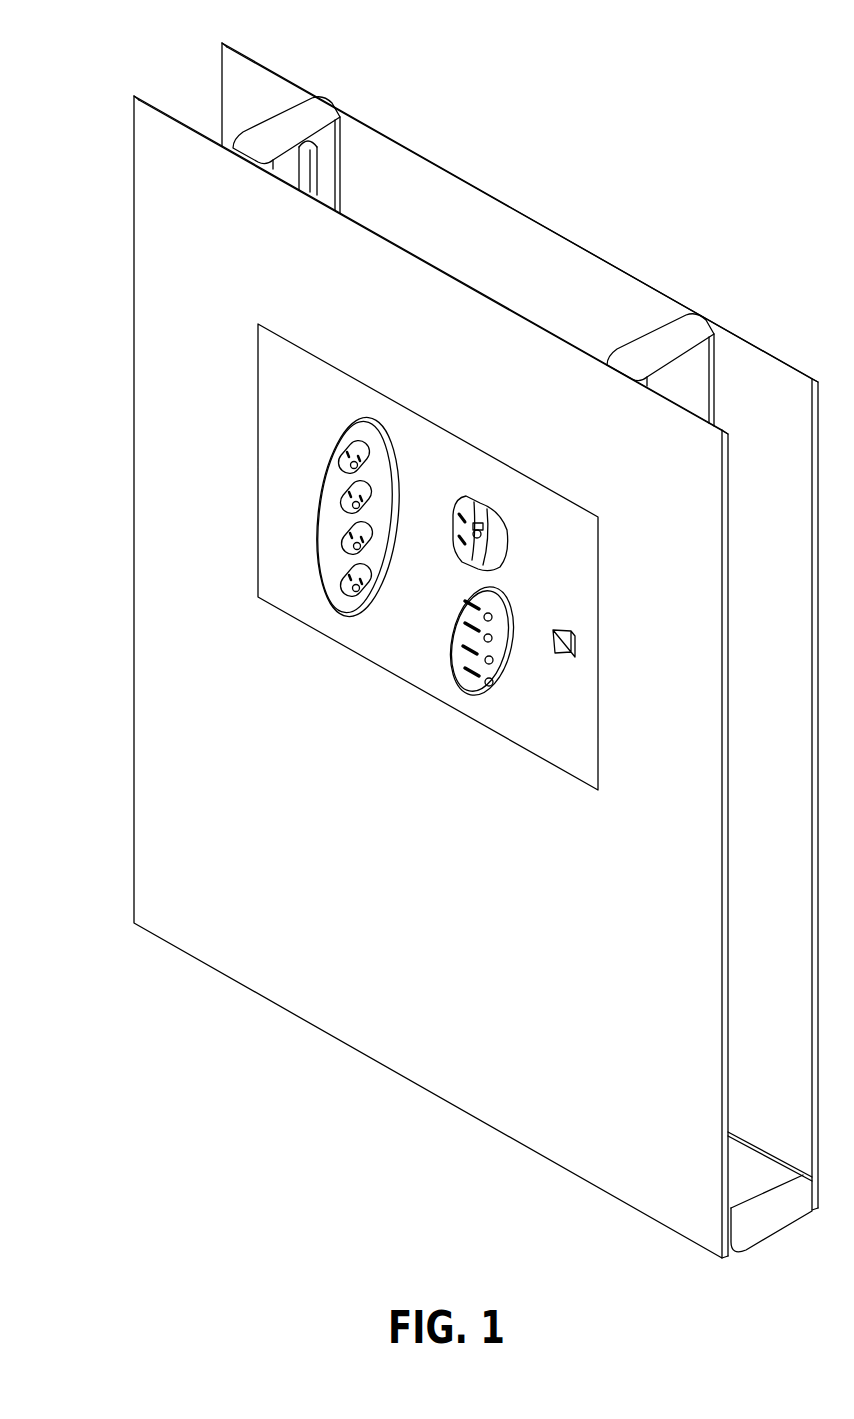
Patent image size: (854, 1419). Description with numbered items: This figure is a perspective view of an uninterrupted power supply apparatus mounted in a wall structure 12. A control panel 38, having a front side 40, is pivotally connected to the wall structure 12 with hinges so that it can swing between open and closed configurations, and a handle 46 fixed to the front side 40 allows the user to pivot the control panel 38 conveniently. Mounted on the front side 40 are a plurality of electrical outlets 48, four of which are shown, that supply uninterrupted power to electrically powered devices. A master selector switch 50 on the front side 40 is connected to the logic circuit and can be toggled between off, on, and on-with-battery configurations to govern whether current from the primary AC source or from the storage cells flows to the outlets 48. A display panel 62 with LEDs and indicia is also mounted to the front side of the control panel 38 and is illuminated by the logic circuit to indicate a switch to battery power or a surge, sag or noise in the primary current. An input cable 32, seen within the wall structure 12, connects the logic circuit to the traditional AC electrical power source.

The wall structure 12 is at (132, 188).
The input cable 32 is at (318, 152).
The control panel 38 is at (512, 742).
The front side 40 is at (568, 500).
The handle 46 is at (574, 636).
The electrical outlets 48 is at (322, 498).
The master selector switch 50 is at (477, 522).
The display panel 62 is at (453, 645).